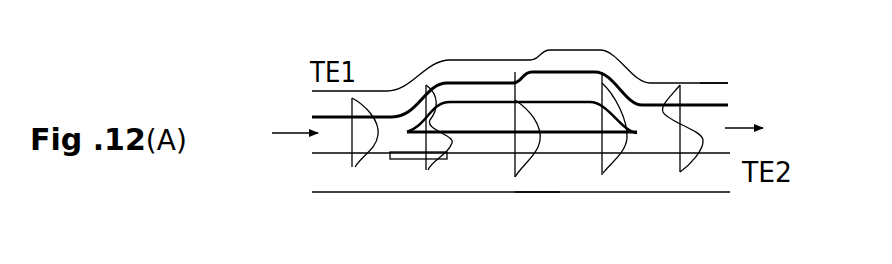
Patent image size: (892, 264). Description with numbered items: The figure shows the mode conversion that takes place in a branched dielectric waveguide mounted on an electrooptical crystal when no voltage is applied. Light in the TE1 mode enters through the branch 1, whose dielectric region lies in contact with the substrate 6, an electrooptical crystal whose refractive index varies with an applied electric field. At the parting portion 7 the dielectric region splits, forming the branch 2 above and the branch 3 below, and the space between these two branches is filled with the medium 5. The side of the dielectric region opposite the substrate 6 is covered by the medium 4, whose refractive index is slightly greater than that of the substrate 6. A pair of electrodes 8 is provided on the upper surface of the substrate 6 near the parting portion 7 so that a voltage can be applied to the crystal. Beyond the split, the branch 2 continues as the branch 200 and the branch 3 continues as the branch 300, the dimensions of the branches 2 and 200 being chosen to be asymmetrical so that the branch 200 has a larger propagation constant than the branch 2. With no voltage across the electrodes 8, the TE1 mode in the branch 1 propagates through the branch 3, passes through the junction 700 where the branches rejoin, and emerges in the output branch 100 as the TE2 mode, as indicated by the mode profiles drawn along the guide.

The branch 1 is at (335, 145).
The branch 2 is at (462, 92).
The branch 3 is at (477, 150).
The medium 4 is at (490, 70).
The medium 5 is at (548, 115).
The substrate 6 is at (545, 178).
The parting portion 7 is at (407, 129).
The electrodes 8 is at (415, 157).
The branch 100 is at (715, 117).
The branch 200 is at (592, 83).
The branch 300 is at (588, 143).
The junction 700 is at (634, 136).